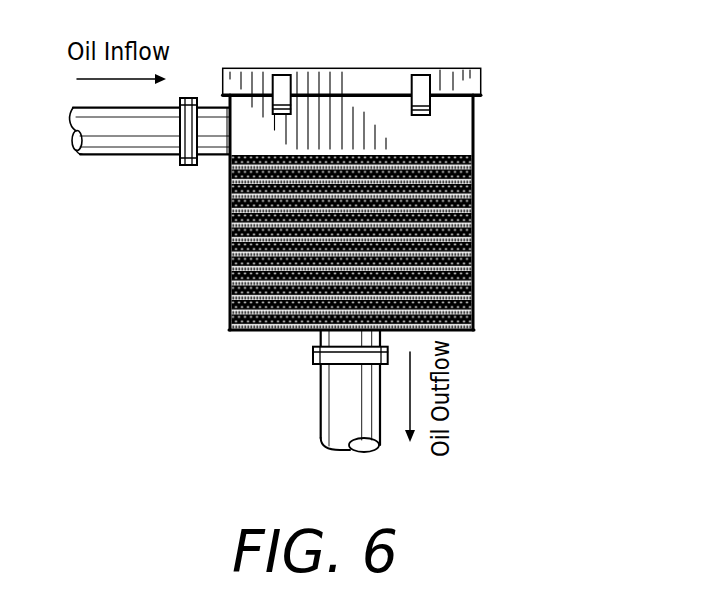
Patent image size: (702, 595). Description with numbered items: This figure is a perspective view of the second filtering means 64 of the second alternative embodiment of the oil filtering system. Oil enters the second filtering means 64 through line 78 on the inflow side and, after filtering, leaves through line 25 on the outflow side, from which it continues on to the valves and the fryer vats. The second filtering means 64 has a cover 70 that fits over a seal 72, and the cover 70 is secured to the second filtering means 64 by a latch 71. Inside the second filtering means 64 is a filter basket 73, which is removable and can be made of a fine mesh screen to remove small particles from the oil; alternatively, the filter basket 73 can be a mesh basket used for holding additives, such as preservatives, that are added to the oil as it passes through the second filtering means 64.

The second filtering means 64 is at (504, 276).
The cover 70 is at (472, 78).
The latch 71 is at (420, 80).
The seal 72 is at (450, 98).
The filter basket 73 is at (472, 203).
The line 78 is at (87, 155).
The line 25 is at (327, 407).